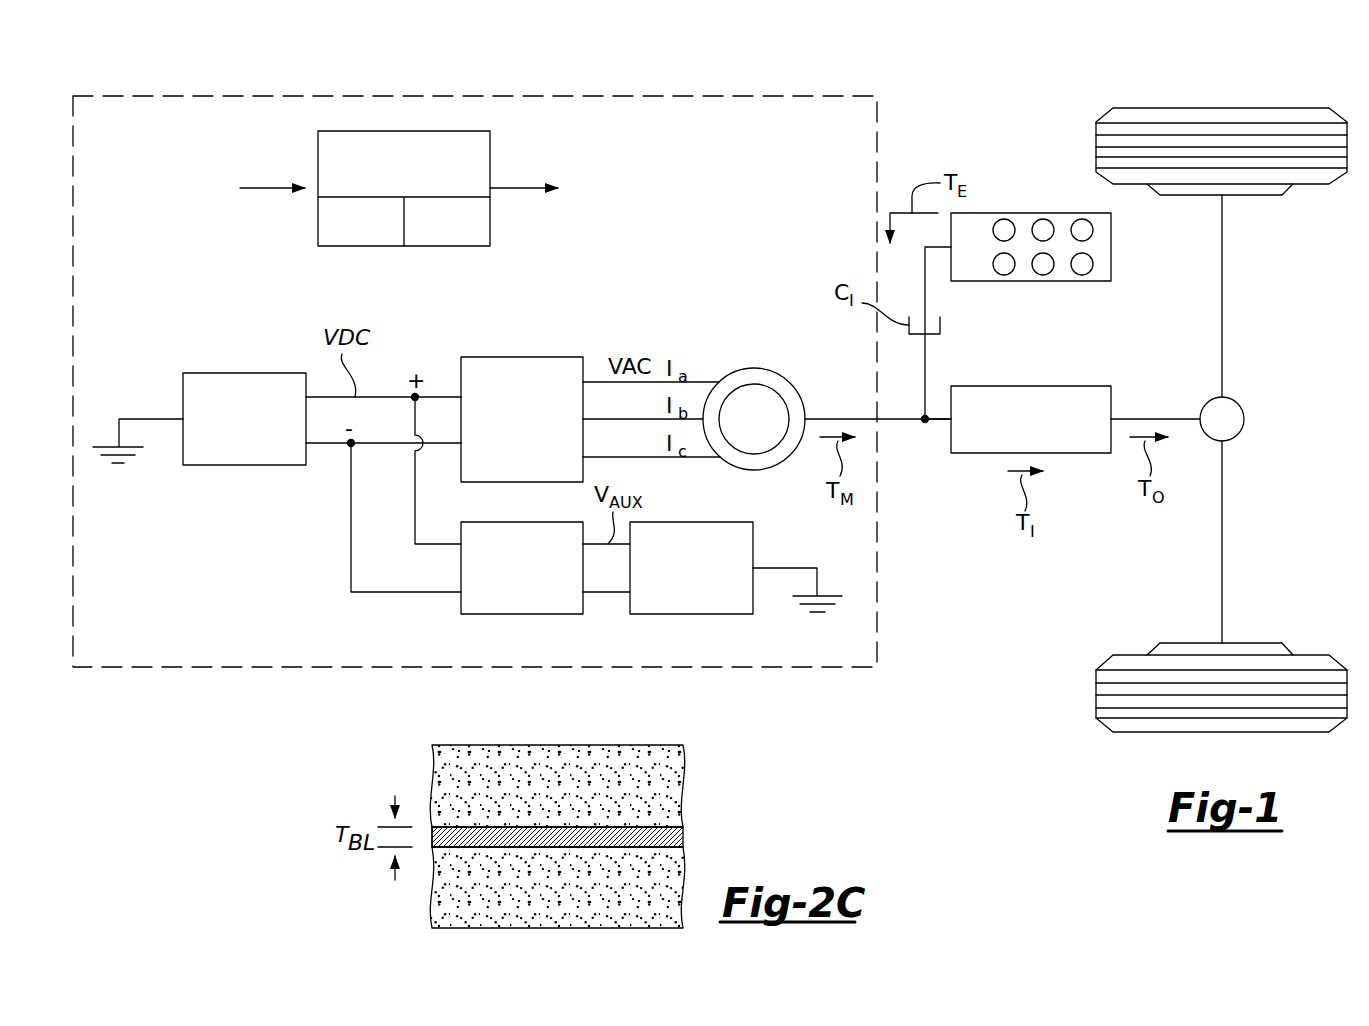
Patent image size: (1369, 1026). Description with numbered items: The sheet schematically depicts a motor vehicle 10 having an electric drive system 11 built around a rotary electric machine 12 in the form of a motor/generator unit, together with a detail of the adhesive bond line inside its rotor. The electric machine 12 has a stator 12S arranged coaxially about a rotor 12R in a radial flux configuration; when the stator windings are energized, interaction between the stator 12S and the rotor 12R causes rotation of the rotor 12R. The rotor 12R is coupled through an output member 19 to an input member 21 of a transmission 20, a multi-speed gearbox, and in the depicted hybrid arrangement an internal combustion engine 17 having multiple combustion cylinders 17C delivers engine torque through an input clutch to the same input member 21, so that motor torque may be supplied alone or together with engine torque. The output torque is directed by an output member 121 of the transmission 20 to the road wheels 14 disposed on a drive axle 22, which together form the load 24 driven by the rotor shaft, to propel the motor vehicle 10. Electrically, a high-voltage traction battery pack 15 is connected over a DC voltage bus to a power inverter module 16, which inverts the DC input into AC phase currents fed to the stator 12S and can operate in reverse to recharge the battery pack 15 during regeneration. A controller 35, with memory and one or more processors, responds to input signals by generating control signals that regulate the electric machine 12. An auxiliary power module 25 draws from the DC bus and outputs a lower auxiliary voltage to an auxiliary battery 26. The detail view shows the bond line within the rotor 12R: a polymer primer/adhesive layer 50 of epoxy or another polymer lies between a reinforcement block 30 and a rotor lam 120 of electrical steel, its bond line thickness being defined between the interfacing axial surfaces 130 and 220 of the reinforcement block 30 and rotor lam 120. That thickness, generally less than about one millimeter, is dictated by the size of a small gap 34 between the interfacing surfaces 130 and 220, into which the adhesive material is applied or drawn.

In FIG. 1, the motor vehicle 10 is at (900, 62).
In FIG. 1, the electric drive system 11 is at (475, 96).
In FIG. 1, the rotary electric machine 12 is at (751, 419).
In FIG. 1, the stator 12S is at (766, 378).
In FIG. 1, the rotor 12R is at (766, 455).
In FIG. 1, the road wheels 14 is at (1222, 108).
In FIG. 1, the high-voltage traction battery pack 15 is at (242, 373).
In FIG. 1, the power inverter module 16 is at (514, 357).
In FIG. 1, the internal combustion engine 17 is at (1034, 245).
In FIG. 1, the combustion cylinders 17C is at (1043, 268).
In FIG. 1, the output member 19 is at (830, 419).
In FIG. 1, the transmission 20 is at (1033, 386).
In FIG. 1, the input member 21 is at (941, 419).
In FIG. 1, the drive axle 22 is at (1222, 296).
In FIG. 1, the load 24 is at (1268, 62).
In FIG. 1, the auxiliary power module 25 is at (520, 614).
In FIG. 1, the auxiliary battery 26 is at (690, 614).
In FIG. 1, the controller 35 is at (318, 153).
In FIG. 1, the output member 121 is at (1155, 419).
In FIG. 2C, the reinforcement blocks 30 is at (572, 800).
In FIG. 2C, the rotor lam 120 is at (580, 904).
In FIG. 2C, the polymer primer/adhesive layer 50 is at (640, 835).
In FIG. 2C, the interfacing axial surface 130 is at (470, 830).
In FIG. 2C, the interfacing axial surface 220 is at (670, 840).
In FIG. 2C, the gap 34 is at (428, 846).